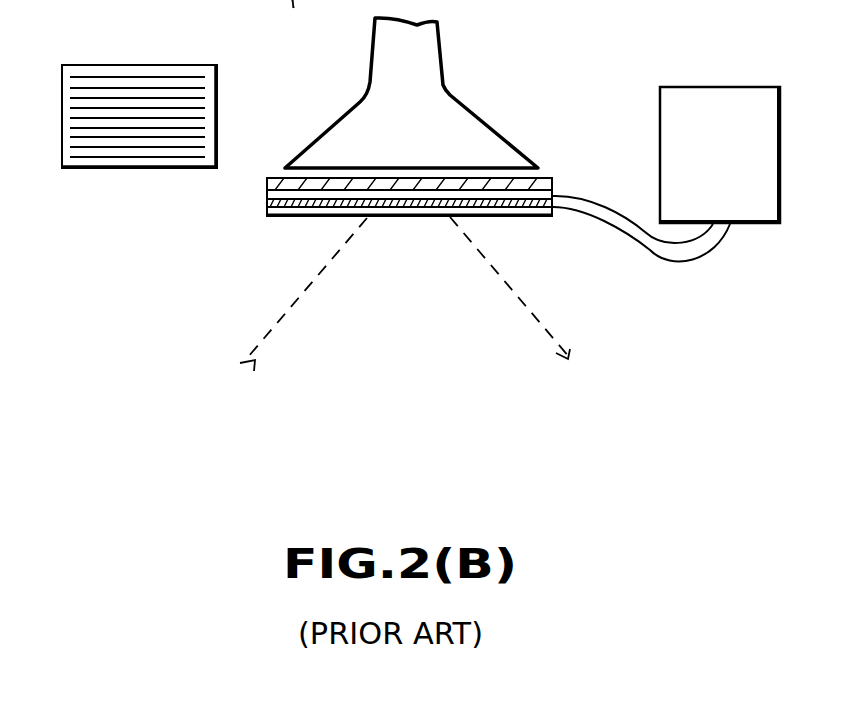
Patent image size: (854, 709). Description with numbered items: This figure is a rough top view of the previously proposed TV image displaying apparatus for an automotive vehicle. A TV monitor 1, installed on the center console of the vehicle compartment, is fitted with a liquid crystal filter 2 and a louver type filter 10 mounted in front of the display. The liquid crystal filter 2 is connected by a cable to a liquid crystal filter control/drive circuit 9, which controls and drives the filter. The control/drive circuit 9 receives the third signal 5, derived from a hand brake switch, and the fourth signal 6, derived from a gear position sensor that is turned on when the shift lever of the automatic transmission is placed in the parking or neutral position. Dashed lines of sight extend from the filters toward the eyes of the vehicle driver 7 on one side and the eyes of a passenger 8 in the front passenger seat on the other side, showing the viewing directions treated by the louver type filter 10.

The TV monitor 1 is at (477, 122).
The liquid crystal filter 2 is at (258, 180).
The third signal 5 is at (274, 8).
The fourth signal 6 is at (291, 19).
The eyes of the vehicle driver 7 is at (577, 398).
The eyes of a passenger 8 is at (232, 404).
The liquid crystal filter control/drive circuit 9 is at (716, 87).
The louver type filter 10 is at (156, 217).